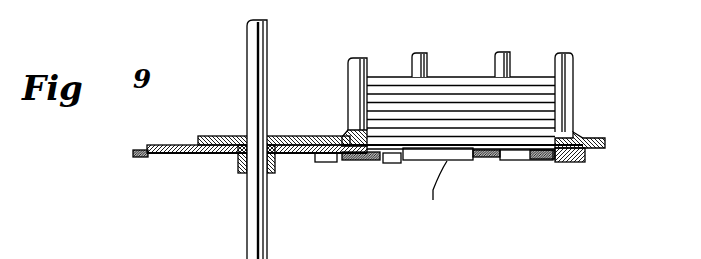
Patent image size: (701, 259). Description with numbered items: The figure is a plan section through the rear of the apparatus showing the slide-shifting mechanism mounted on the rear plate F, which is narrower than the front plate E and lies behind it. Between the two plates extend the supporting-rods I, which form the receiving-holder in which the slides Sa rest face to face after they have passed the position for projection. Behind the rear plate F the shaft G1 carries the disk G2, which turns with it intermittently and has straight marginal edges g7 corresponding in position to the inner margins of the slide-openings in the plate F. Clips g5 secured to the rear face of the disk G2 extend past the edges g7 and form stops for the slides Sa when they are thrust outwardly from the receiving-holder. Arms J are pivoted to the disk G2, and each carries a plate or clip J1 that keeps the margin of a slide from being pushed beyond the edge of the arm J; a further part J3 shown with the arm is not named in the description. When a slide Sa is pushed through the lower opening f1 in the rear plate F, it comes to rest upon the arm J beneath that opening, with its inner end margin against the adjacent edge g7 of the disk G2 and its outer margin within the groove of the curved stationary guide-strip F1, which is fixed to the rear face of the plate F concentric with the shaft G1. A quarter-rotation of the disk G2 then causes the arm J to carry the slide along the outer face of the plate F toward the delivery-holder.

The front plate E is at (313, 128).
The disk G2 is at (223, 148).
The shaft G1 is at (268, 199).
The plate or clip on arm J1 is at (413, 190).
The clip g5 is at (326, 164).
The straight edge of disk g7 is at (372, 161).
The slide Sa is at (452, 96).
The supporting-rod I is at (411, 57).
The rear plate F is at (605, 143).
The guide-strip F1 is at (570, 162).
The lowermost slide-opening f1 is at (550, 143).
The arm J is at (447, 160).
The connecting link J3 is at (433, 194).